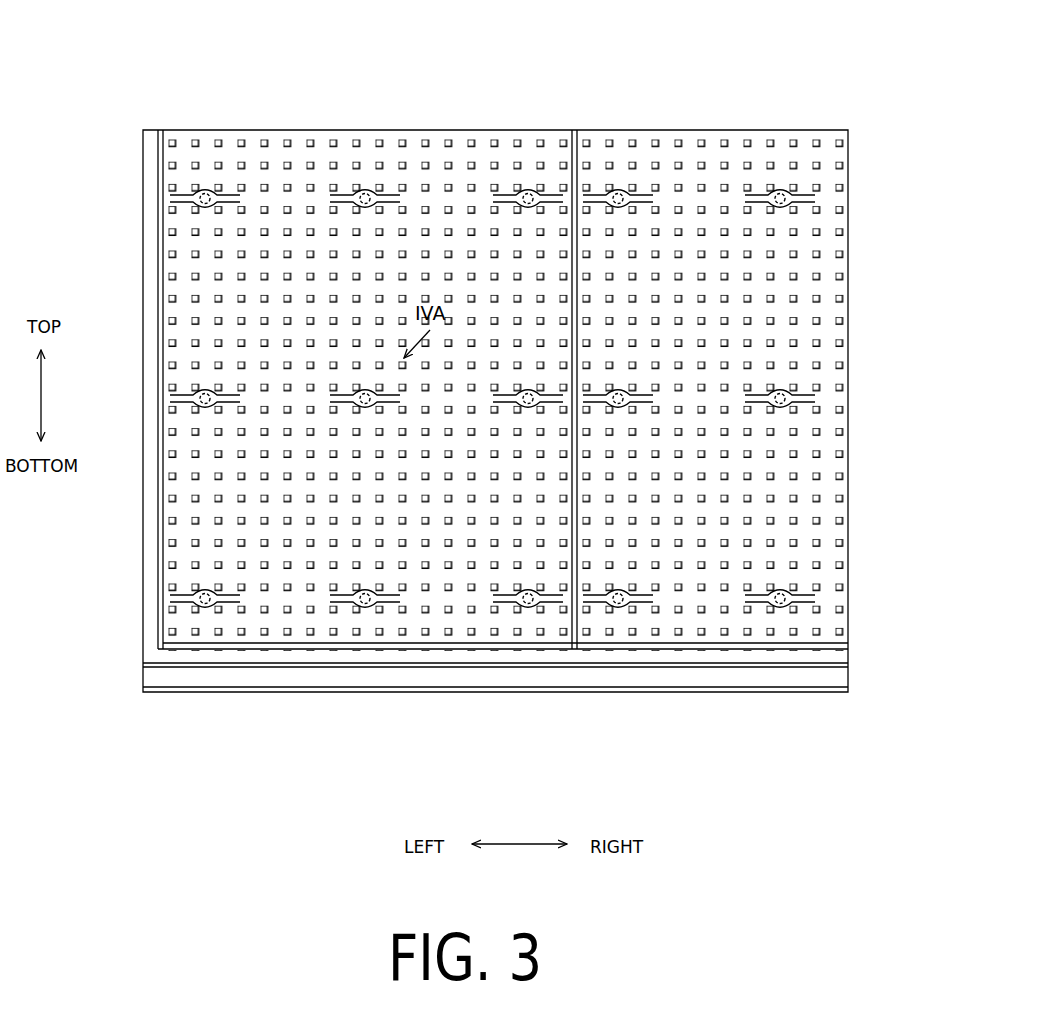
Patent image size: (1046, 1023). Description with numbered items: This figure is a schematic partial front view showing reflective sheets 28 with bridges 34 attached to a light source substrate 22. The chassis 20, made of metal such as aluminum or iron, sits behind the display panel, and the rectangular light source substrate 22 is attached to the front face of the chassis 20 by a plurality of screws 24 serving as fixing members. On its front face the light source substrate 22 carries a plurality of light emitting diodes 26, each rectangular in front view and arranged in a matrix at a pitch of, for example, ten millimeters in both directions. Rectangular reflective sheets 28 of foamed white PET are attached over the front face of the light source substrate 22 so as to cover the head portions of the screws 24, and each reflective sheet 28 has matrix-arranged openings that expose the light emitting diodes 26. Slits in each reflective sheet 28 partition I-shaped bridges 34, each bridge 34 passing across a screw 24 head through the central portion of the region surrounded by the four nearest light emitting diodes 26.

The chassis 20 is at (146, 278).
The light source substrate 22 is at (162, 443).
The screw 24 is at (172, 208).
The light emitting diode 26 is at (516, 165).
The reflective sheet 28 is at (172, 507).
The bridge 34 is at (205, 194).